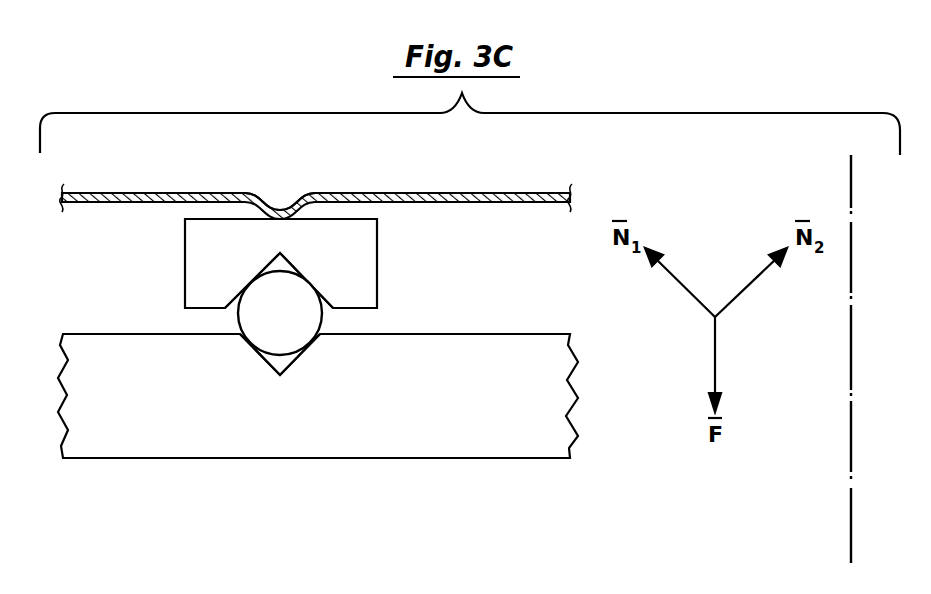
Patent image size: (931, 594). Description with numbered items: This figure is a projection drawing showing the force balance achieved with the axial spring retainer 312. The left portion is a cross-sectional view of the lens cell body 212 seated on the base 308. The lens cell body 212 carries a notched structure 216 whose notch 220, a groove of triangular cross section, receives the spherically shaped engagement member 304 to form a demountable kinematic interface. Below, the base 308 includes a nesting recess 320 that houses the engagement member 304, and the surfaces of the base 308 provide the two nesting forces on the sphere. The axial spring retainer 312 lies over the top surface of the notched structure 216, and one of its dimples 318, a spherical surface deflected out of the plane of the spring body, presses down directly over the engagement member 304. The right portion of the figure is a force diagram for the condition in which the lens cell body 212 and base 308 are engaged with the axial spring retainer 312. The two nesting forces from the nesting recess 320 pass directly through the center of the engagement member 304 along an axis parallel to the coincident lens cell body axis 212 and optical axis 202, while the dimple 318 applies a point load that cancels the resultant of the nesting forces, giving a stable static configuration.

The optical axis 202 is at (851, 197).
The lens cell body 212 is at (783, 359).
The notched structure 216 is at (378, 261).
The notch 220 is at (290, 265).
The engagement member 304 is at (323, 317).
The base 308 is at (432, 418).
The axial spring retainer 312 is at (453, 192).
The dimple 318 is at (285, 203).
The nesting recess 320 is at (263, 358).